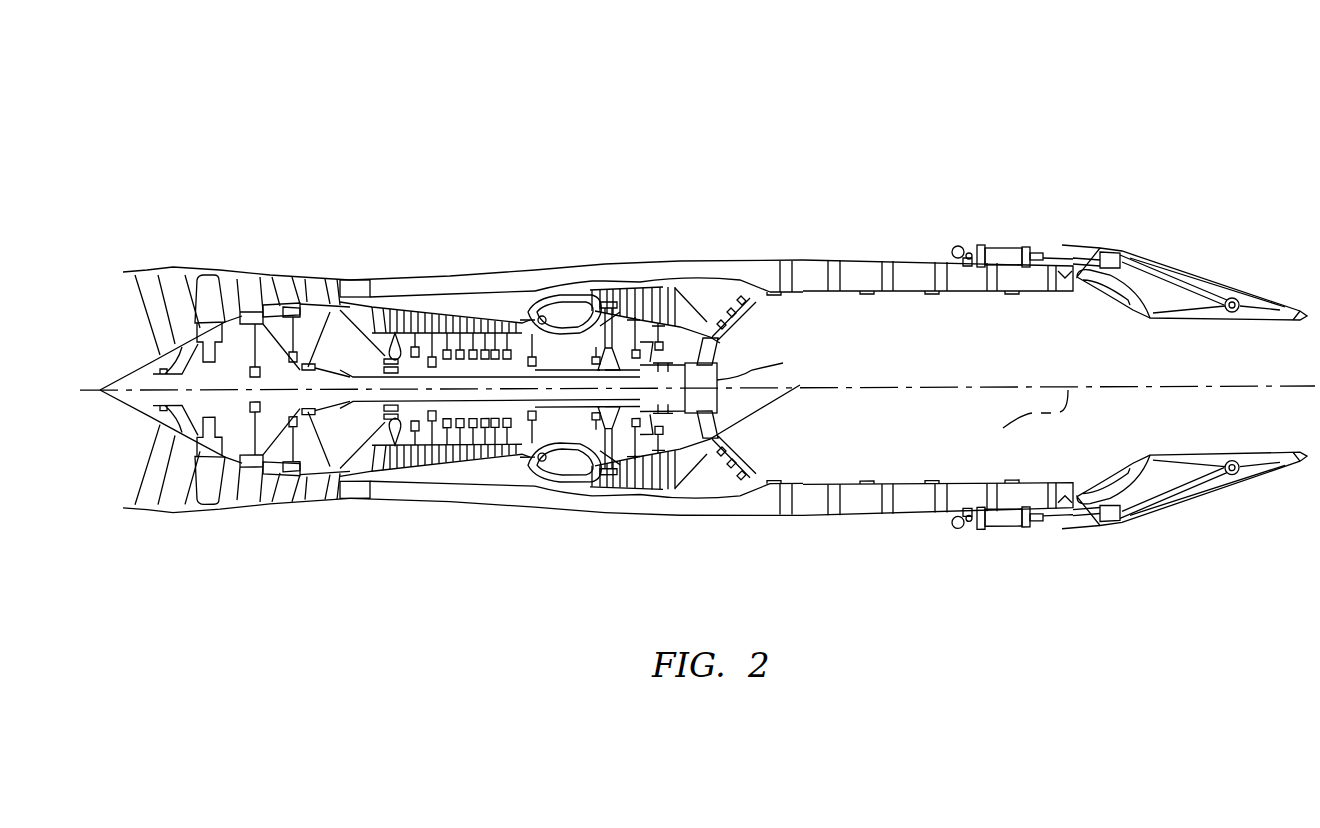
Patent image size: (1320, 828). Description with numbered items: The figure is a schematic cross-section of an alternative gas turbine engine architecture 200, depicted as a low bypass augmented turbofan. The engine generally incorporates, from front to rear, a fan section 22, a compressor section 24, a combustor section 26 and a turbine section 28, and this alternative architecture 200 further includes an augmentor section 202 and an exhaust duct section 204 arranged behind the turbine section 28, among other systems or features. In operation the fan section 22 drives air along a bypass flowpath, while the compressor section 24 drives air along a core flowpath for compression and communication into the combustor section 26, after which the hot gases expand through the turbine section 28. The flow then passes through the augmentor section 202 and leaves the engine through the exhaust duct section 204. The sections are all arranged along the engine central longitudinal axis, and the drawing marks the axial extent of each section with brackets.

The engine architecture 200 is at (972, 102).
The fan section 22 is at (328, 203).
The compressor section 24 is at (328, 203).
The combustor section 26 is at (605, 203).
The turbine section 28 is at (680, 203).
The augmentor section 202 is at (680, 203).
The exhaust duct section 204 is at (803, 203).